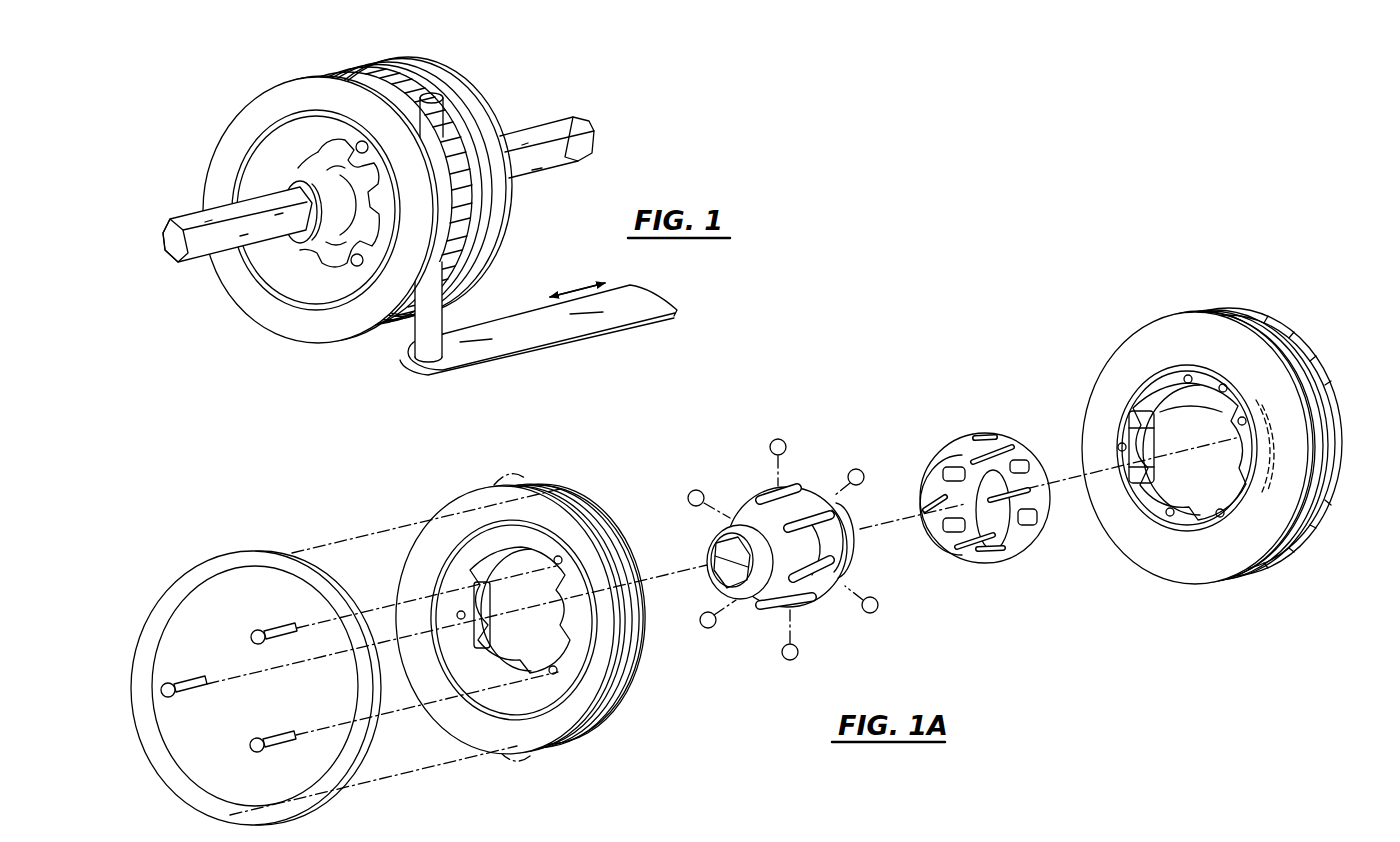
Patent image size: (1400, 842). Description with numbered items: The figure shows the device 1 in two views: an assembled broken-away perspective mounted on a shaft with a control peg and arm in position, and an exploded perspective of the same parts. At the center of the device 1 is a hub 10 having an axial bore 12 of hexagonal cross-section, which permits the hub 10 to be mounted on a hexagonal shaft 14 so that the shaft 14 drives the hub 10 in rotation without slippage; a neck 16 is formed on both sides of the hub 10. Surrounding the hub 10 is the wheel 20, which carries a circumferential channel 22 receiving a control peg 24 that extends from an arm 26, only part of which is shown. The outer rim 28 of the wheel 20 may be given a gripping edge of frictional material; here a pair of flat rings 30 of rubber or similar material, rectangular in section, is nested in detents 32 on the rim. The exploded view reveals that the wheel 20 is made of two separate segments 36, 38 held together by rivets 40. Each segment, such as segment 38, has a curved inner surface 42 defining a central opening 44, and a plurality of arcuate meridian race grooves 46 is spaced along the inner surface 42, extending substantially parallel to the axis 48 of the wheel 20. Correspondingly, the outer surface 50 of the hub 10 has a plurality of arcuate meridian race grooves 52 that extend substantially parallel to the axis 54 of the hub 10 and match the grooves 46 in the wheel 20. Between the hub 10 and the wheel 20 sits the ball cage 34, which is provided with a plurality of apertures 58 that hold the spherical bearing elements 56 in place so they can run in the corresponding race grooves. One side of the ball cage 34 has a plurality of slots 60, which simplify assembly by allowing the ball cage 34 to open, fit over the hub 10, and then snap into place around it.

In FIG. 1, the device 1 is at (291, 347).
In FIG. 1, the hub 10 is at (318, 152).
In FIG. 1A, the hub 10 is at (826, 634).
In FIG. 1, the axial bore 12 is at (266, 195).
In FIG. 1A, the axial bore 12 is at (712, 556).
In FIG. 1, the hexagonal shaft 14 is at (190, 264).
In FIG. 1, the neck 16 is at (312, 250).
In FIG. 1A, the neck 16 is at (760, 592).
In FIG. 1, the wheel 20 is at (224, 146).
In FIG. 1, the circumferential channel 22 is at (468, 217).
In FIG. 1, the control peg 24 is at (405, 351).
In FIG. 1, the arm 26 is at (490, 340).
In FIG. 1, the outer rim 28 is at (483, 105).
In FIG. 1A, the outer rim 28 is at (625, 700).
In FIG. 1, the flat rings 30 is at (418, 62).
In FIG. 1A, the flat rings 30 is at (275, 551).
In FIG. 1A, the detents 32 is at (565, 492).
In FIG. 1, the ball cage 34 is at (322, 146).
In FIG. 1A, the ball cage 34 is at (1027, 455).
In FIG. 1, the segment 36 is at (260, 316).
In FIG. 1A, the segment 36 is at (548, 758).
In FIG. 1, the segment 38 is at (465, 80).
In FIG. 1A, the segment 38 is at (1201, 586).
In FIG. 1, the rivets 40 is at (355, 267).
In FIG. 1A, the rivets 40 is at (250, 637).
In FIG. 1A, the curved inner surface 42 is at (517, 668).
In FIG. 1A, the central opening 44 is at (481, 603).
In FIG. 1A, the arcuate meridian race grooves 46 is at (476, 636).
In FIG. 1A, the axis 48 is at (1203, 442).
In FIG. 1A, the outer surface 50 is at (848, 571).
In FIG. 1A, the arcuate meridian race grooves 52 is at (815, 518).
In FIG. 1A, the axis 54 is at (858, 530).
In FIG. 1A, the spherical bearing elements 56 is at (769, 449).
In FIG. 1A, the apertures 58 is at (1013, 462).
In FIG. 1A, the slots 60 is at (947, 462).